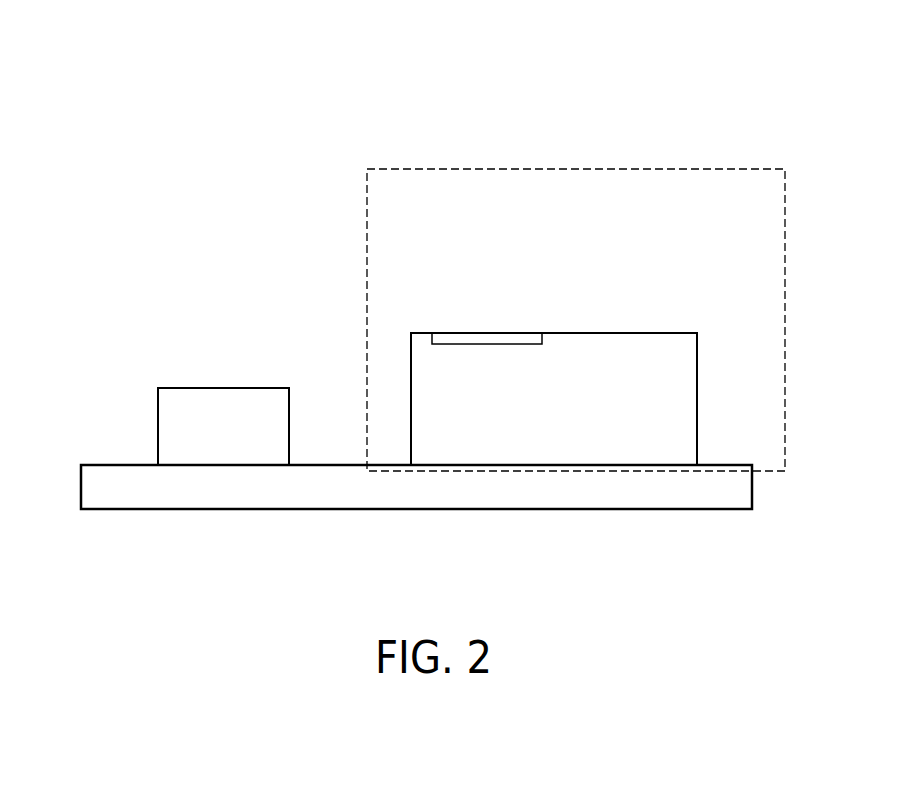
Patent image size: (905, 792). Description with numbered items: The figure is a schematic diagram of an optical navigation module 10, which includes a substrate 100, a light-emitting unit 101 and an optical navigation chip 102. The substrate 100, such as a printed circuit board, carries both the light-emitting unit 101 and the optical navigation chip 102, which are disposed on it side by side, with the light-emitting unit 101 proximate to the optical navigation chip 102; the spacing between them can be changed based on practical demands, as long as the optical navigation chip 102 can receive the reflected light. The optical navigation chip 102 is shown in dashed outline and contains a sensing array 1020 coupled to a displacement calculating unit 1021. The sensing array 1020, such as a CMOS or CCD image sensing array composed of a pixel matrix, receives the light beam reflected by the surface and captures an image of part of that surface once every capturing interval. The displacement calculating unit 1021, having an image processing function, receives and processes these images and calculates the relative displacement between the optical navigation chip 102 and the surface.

The optical navigation module 10 is at (130, 42).
The substrate 100 is at (418, 509).
The light-emitting unit 101 is at (222, 387).
The optical navigation chip 102 is at (575, 168).
The sensing array 1020 is at (456, 332).
The displacement calculating unit 1021 is at (638, 350).